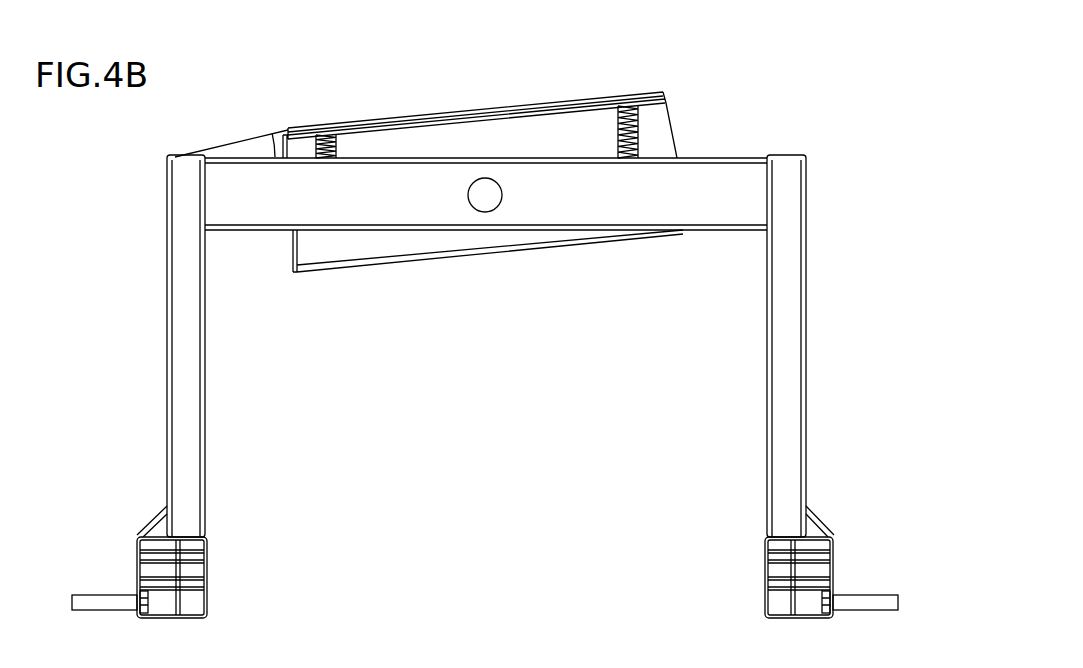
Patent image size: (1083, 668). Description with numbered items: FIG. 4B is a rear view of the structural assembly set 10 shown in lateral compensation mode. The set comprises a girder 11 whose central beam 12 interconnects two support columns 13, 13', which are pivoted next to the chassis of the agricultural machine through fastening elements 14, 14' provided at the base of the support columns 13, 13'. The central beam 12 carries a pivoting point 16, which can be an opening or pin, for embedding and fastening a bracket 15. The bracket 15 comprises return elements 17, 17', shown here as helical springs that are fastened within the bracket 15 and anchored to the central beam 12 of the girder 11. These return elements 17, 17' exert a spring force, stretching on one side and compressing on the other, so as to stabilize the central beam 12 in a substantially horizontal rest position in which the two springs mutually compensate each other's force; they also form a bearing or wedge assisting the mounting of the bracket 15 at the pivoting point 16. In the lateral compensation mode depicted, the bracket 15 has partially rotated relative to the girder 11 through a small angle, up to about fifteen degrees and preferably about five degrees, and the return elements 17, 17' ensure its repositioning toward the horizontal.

The structural assembly set 10 is at (828, 118).
The girder 11 is at (167, 213).
The central beam 12 is at (250, 218).
The support column 13 is at (136, 346).
The support column 13' is at (844, 346).
The fastening element 14 is at (182, 561).
The fastening element 14' is at (843, 557).
The bracket 15 is at (522, 106).
The pivoting point 16 is at (488, 195).
The return element 17 is at (349, 112).
The return element 17' is at (684, 132).